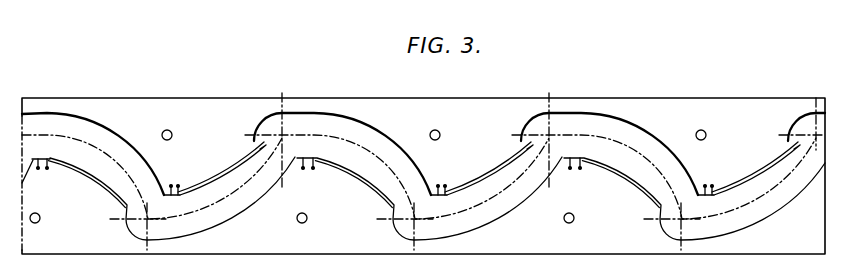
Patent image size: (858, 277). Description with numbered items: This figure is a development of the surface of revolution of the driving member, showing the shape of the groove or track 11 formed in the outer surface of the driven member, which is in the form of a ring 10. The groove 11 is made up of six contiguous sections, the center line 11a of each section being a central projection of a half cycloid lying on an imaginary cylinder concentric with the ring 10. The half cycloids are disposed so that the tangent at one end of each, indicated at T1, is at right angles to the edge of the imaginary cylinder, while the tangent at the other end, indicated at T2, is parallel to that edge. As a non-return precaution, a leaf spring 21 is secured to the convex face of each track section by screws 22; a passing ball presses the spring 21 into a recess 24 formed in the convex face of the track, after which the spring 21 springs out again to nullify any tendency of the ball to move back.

The ring 10 is at (658, 79).
The groove 11 is at (494, 195).
The center line 11a is at (360, 148).
The leaf spring 21 is at (230, 173).
The screws 22 is at (175, 189).
The recess 24 is at (238, 163).
The tangent T1 is at (284, 98).
The tangent T2 is at (316, 134).